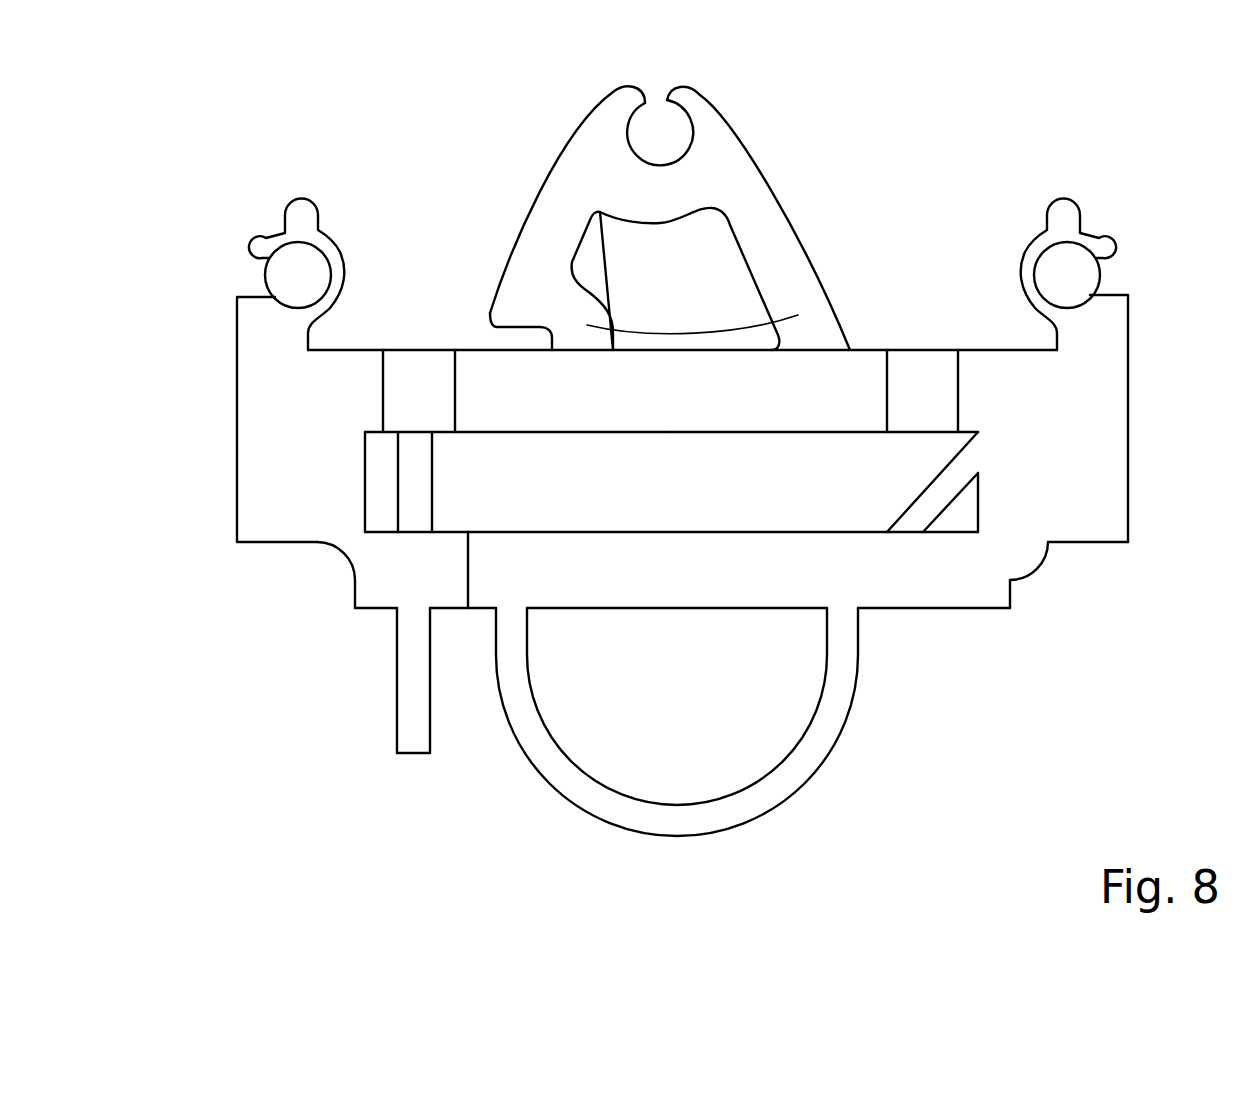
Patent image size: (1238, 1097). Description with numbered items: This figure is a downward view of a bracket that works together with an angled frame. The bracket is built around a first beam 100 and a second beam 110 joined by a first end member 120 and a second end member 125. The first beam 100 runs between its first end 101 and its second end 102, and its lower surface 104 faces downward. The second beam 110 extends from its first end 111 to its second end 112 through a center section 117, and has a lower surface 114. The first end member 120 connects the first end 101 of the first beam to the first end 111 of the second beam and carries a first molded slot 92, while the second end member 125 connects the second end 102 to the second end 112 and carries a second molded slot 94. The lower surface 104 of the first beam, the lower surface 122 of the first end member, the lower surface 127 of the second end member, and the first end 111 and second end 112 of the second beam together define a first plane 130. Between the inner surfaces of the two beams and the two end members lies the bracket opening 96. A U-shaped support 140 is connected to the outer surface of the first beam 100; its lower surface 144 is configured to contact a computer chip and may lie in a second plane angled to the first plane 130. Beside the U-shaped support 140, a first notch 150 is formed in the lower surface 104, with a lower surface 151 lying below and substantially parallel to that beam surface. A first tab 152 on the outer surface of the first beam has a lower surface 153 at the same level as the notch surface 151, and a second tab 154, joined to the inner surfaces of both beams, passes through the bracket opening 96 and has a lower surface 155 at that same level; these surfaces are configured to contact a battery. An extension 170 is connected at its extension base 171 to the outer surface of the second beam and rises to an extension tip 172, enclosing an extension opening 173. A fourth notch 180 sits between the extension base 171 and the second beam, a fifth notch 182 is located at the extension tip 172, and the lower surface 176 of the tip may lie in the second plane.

The first molded slot 92 is at (283, 273).
The second molded slot 94 is at (1083, 273).
The bracket opening 96 is at (835, 455).
The first beam 100 is at (693, 588).
The first end of the first beam 101 is at (965, 597).
The second end of the first beam 102 is at (372, 578).
The lower surface of the first beam 104 is at (675, 553).
The second beam 110 is at (664, 362).
The first end of the second beam 111 is at (993, 378).
The second end of the second beam 112 is at (352, 370).
The lower surface of the second beam 114 is at (780, 408).
The center section of the second beam 117 is at (610, 410).
The first end member 120 is at (1117, 462).
The lower surface of the first end member 122 is at (1105, 405).
The second end member 125 is at (250, 503).
The lower surface of the second end member 127 is at (250, 463).
The first plane 130 is at (1085, 527).
The U-shaped support 140 is at (600, 800).
The lower surface of the U-shaped support 144 is at (793, 782).
The first notch 150 is at (443, 588).
The lower surface of the first notch 151 is at (447, 550).
The first tab 152 is at (405, 698).
The lower surface of the first tab 153 is at (408, 722).
The second tab 154 is at (418, 475).
The lower surface of the second tab 155 is at (423, 500).
The extension 170 is at (757, 182).
The extension base 171 is at (705, 330).
The extension tip 172 is at (603, 123).
The extension opening 173 is at (617, 233).
The lower surface of the extension tip 176 is at (778, 202).
The fourth notch 180 is at (528, 343).
The fifth notch 182 is at (655, 127).